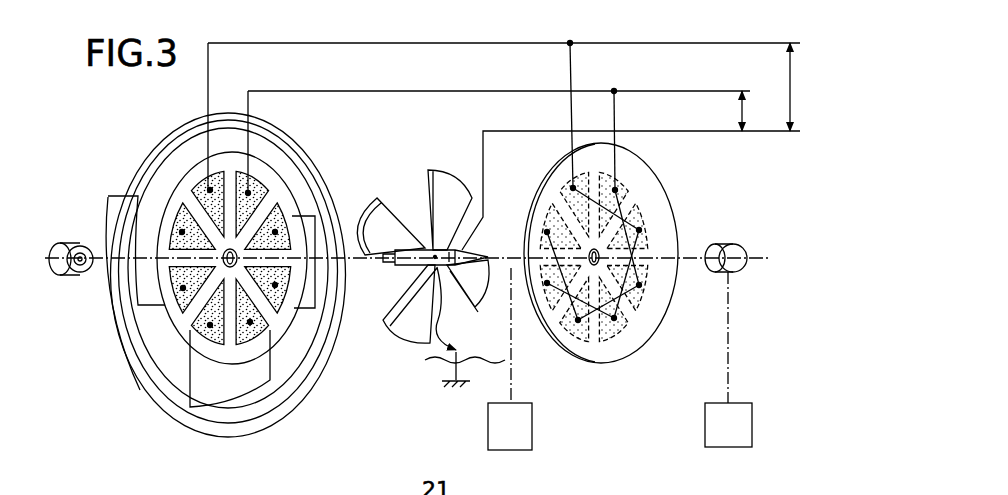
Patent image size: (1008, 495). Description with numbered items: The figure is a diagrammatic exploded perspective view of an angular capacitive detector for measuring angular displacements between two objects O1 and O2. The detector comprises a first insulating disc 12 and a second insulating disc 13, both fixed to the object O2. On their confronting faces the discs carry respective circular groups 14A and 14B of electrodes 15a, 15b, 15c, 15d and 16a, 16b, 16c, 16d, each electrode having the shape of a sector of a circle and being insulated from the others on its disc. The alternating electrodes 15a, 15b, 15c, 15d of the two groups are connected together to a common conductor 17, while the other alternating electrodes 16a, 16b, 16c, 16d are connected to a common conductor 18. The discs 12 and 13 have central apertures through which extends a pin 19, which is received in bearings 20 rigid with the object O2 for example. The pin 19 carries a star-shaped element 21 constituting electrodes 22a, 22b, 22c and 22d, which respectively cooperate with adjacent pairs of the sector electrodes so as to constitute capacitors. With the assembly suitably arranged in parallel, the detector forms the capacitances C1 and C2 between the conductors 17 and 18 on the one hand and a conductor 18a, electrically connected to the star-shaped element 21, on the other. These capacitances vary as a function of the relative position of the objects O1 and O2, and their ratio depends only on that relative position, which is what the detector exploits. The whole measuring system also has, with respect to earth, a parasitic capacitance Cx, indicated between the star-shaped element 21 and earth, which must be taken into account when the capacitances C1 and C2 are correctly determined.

The first insulating disc 12 is at (170, 183).
The second insulating disc 13 is at (664, 192).
The circular group of electrodes 14A is at (212, 378).
The circular group of electrodes 14B is at (600, 372).
The electrode 15a is at (596, 128).
The electrode 15b is at (275, 232).
The electrode 15c is at (250, 322).
The electrode 15d is at (183, 288).
The electrode 16a is at (247, 193).
The electrode 16b is at (275, 285).
The electrode 16c is at (210, 325).
The electrode 16d is at (182, 232).
The common conductor 17 is at (432, 32).
The common conductor 18 is at (676, 85).
The conductor 18a is at (655, 131).
The pin 19 is at (395, 262).
The bearings 20 is at (76, 270).
The star-shaped element 21 is at (406, 350).
The electrode 22a is at (450, 186).
The electrode 22b is at (473, 272).
The electrode 22c is at (388, 322).
The electrode 22d is at (388, 228).
The capacitor C1 is at (759, 112).
The capacitor C2 is at (805, 87).
The parasitic capacitance Cx is at (465, 327).
The object O1 is at (532, 440).
The object O2 is at (742, 447).